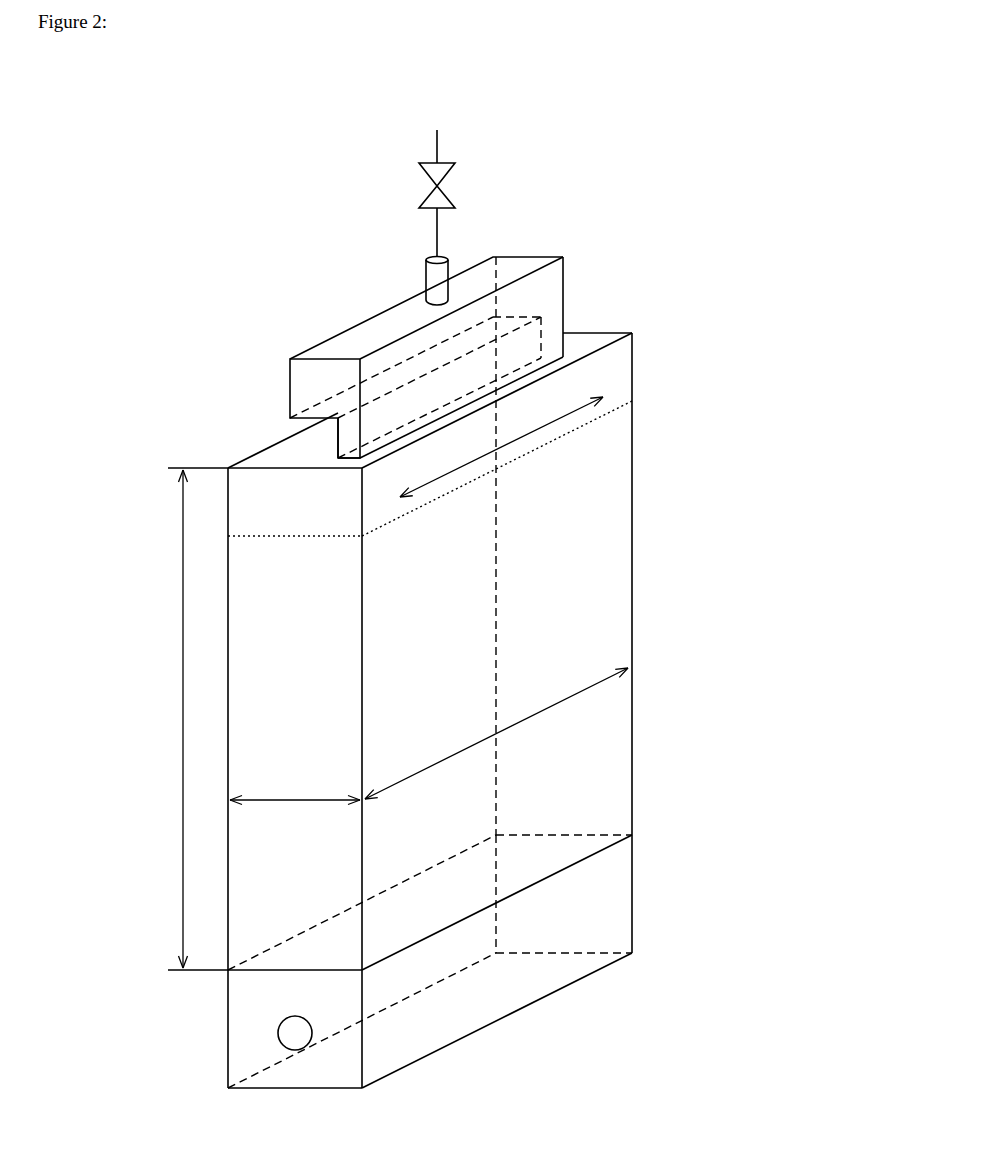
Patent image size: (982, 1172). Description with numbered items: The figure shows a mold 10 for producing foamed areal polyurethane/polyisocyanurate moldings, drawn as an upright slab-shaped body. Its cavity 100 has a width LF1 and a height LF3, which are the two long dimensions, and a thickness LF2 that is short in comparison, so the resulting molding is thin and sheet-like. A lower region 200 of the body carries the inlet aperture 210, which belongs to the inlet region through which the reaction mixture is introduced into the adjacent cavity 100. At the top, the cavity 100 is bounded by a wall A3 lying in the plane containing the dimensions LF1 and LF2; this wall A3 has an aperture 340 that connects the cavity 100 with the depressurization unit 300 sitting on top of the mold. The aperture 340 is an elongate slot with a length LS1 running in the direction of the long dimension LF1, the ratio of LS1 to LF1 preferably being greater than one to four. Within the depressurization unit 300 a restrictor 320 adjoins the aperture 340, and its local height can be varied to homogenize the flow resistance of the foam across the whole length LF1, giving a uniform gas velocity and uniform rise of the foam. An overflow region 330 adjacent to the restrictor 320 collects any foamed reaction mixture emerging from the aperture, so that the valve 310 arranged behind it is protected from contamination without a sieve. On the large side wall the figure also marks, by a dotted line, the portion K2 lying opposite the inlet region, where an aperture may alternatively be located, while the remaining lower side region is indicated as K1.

The mold 10 is at (228, 622).
The cavity 100 is at (587, 730).
The cell base / lower portion 200 is at (593, 912).
The inlet aperture 210 is at (295, 1033).
The depressurization unit 300 is at (563, 280).
The valve 310 is at (447, 192).
The restrictor 320 is at (553, 328).
The overflow region 330 is at (382, 336).
The aperture 340 is at (555, 358).
The wall A3 is at (299, 448).
The lower side region K1 is at (613, 463).
The portion of a wall K2 is at (613, 386).
The width LF1 is at (496, 733).
The thickness LF2 is at (295, 787).
The height LF3 is at (181, 719).
The length of the aperture LS1 is at (501, 447).